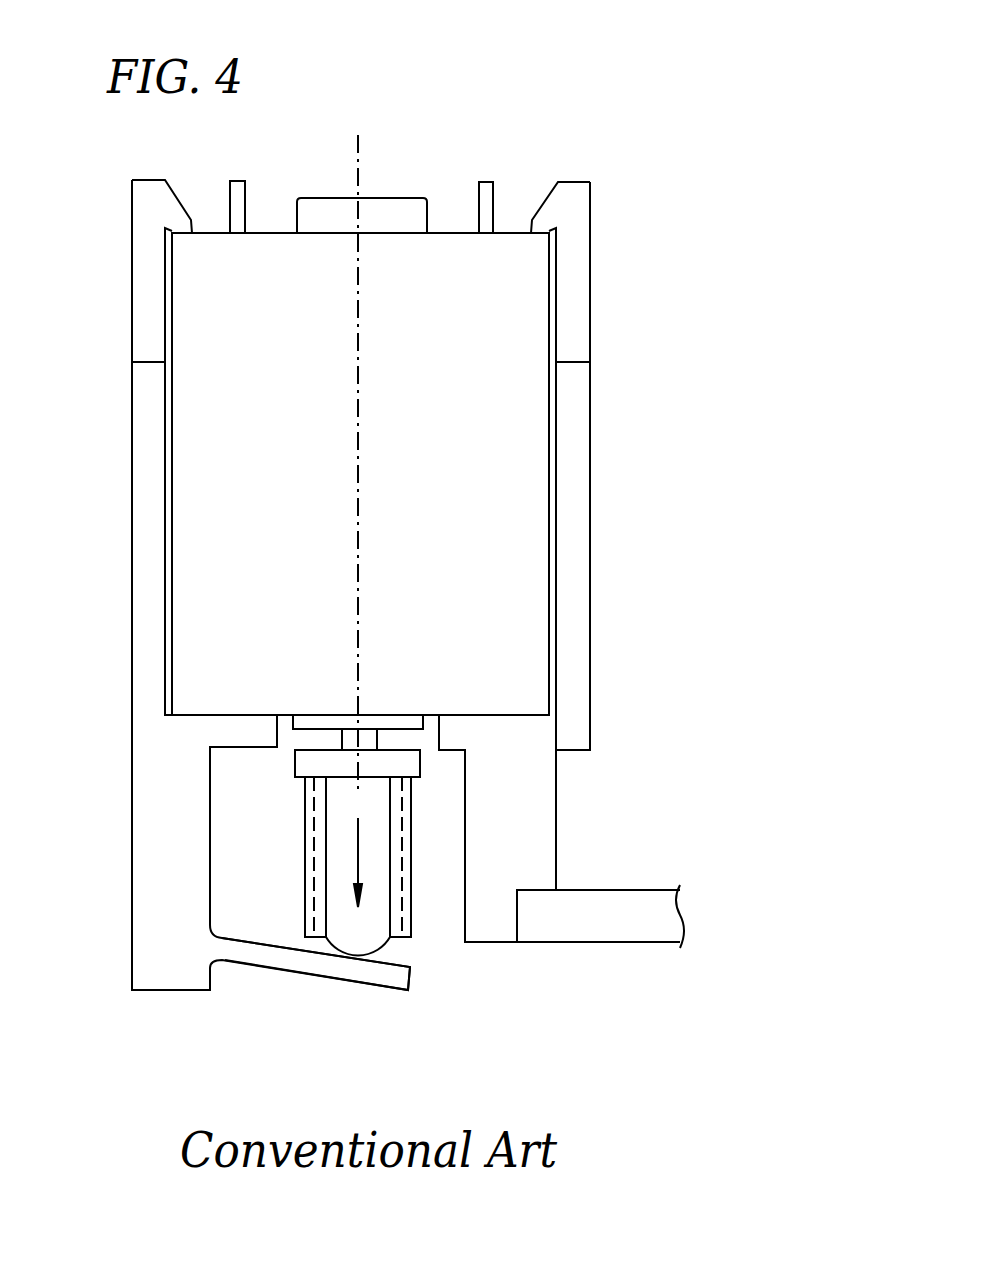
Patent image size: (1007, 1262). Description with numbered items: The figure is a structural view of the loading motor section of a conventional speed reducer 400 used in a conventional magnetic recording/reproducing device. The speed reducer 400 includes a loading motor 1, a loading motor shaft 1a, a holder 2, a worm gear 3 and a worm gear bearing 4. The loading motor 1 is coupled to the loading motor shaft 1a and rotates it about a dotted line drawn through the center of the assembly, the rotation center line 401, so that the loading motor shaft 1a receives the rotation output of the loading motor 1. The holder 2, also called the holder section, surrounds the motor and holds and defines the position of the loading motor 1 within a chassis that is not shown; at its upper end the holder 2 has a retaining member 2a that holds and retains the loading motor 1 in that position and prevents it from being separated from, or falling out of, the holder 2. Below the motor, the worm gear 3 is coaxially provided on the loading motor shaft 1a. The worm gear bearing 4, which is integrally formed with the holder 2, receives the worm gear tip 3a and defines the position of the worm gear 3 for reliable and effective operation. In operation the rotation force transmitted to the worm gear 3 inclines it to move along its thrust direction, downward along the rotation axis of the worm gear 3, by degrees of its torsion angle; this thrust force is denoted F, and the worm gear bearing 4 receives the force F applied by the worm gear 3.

The speed reducer 400 is at (627, 82).
The rotation center line 401 is at (362, 444).
The loading motor 1 is at (518, 313).
The loading motor shaft 1a is at (348, 740).
The holder 2 is at (572, 459).
The retaining member 2a is at (165, 207).
The worm gear 3 is at (380, 853).
The worm gear tip 3a is at (358, 957).
The worm gear bearing 4 is at (268, 958).
The force F is at (357, 857).